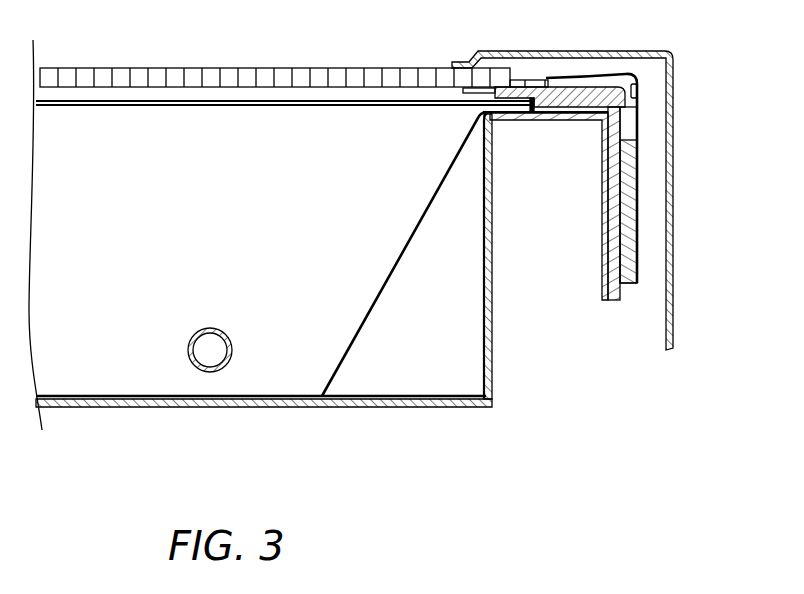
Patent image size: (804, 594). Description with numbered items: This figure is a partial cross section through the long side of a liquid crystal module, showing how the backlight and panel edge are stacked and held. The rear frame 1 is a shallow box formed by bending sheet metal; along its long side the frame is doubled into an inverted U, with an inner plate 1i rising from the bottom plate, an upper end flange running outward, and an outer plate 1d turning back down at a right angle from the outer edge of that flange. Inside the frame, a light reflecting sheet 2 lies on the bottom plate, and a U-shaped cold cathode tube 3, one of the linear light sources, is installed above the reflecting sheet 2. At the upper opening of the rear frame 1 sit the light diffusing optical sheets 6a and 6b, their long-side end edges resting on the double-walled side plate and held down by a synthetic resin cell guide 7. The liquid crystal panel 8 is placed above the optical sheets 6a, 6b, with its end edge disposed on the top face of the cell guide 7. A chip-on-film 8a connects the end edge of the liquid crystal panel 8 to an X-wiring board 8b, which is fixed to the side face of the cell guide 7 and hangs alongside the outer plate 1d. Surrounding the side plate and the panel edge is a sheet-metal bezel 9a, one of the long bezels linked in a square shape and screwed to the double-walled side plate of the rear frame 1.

The rear frame 1 is at (385, 408).
The inner plate 1i is at (493, 303).
The outer plate 1d is at (602, 195).
The light reflecting sheet 2 is at (400, 253).
The U-shaped cold cathode tube 3 is at (197, 328).
The optical sheet 6a is at (237, 107).
The optical sheet 6b is at (300, 100).
The cell guide 7 is at (565, 92).
The liquid crystal panel 8 is at (145, 67).
The chip-on-film 8a is at (640, 112).
The X-wiring board 8b is at (637, 217).
The bezel 9a is at (620, 50).